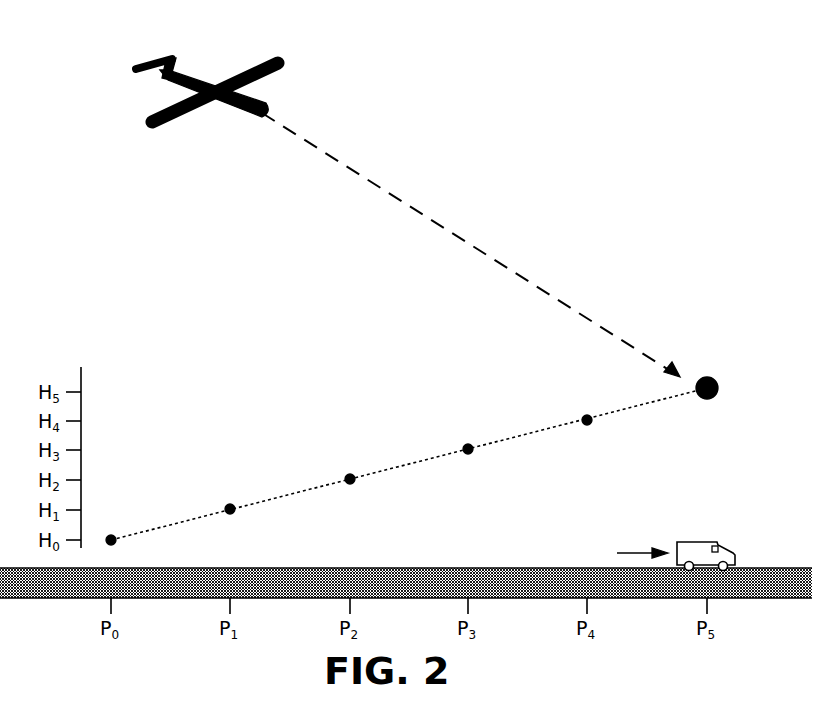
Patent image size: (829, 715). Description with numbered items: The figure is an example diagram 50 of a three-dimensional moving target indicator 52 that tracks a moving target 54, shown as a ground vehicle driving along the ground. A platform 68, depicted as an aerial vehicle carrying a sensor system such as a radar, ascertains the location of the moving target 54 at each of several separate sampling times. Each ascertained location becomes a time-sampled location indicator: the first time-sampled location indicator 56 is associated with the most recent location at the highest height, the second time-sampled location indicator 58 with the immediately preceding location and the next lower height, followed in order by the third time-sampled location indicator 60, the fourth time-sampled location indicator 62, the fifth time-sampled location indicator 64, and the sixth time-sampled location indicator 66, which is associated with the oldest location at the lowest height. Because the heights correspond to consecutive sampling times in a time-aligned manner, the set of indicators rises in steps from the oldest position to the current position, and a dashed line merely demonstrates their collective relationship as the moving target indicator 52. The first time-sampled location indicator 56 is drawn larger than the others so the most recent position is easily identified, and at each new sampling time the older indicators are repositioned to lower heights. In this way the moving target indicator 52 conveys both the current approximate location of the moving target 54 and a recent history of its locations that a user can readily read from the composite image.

The diagram 50 is at (708, 47).
The moving target indicator 52 is at (428, 457).
The moving target 54 is at (693, 543).
The first time-sampled location indicator 56 is at (715, 397).
The second time-sampled location indicator 58 is at (589, 424).
The third time-sampled location indicator 60 is at (470, 453).
The fourth time-sampled location indicator 62 is at (352, 483).
The fifth time-sampled location indicator 64 is at (232, 513).
The sixth time-sampled location indicator 66 is at (115, 545).
The platform 68 is at (150, 126).